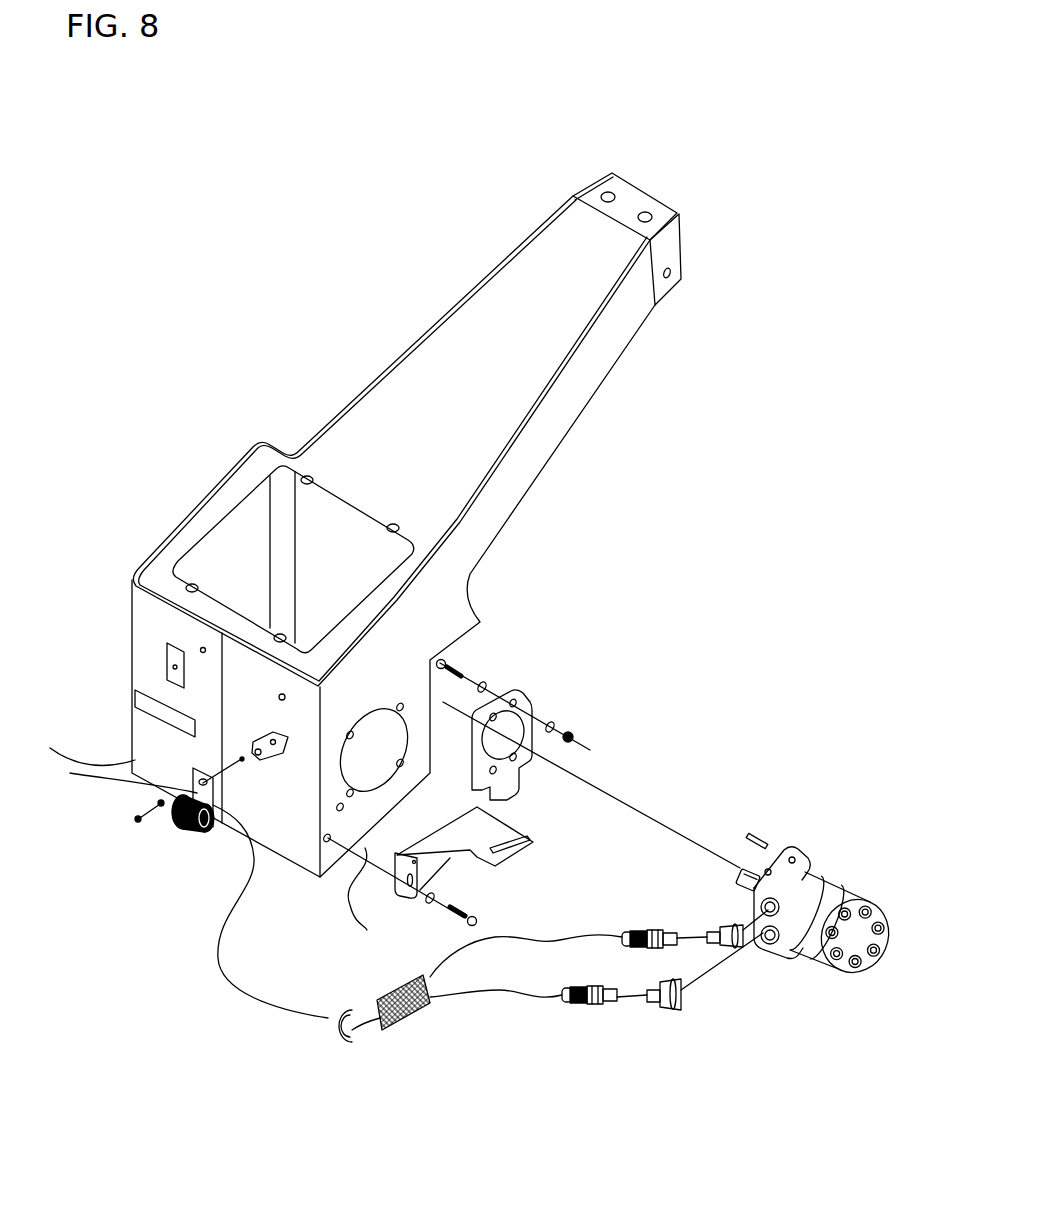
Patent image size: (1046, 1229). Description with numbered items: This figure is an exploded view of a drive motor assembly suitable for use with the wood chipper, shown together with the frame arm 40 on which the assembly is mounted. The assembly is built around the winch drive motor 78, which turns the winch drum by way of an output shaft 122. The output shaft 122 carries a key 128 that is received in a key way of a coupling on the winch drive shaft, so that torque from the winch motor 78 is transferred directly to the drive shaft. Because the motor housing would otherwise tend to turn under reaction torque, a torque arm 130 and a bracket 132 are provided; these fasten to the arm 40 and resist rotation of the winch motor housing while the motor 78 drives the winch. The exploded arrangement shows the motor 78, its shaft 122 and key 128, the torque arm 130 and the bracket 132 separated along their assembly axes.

The frame arm 40 is at (548, 437).
The winch drive motor 78 is at (865, 908).
The output shaft 122 is at (742, 863).
The key 128 is at (763, 832).
The torque arm 130 is at (525, 702).
The bracket 132 is at (508, 833).